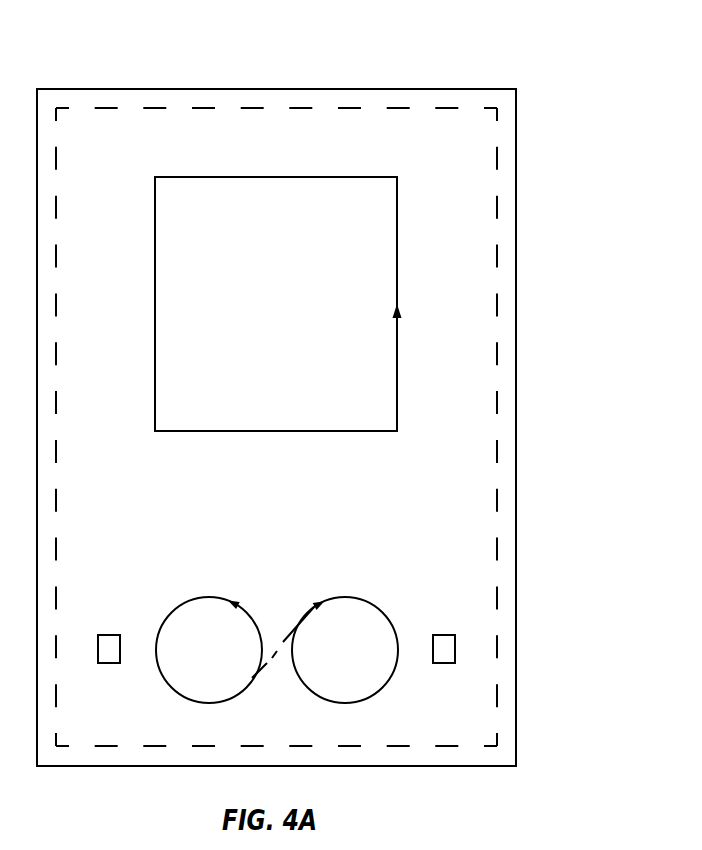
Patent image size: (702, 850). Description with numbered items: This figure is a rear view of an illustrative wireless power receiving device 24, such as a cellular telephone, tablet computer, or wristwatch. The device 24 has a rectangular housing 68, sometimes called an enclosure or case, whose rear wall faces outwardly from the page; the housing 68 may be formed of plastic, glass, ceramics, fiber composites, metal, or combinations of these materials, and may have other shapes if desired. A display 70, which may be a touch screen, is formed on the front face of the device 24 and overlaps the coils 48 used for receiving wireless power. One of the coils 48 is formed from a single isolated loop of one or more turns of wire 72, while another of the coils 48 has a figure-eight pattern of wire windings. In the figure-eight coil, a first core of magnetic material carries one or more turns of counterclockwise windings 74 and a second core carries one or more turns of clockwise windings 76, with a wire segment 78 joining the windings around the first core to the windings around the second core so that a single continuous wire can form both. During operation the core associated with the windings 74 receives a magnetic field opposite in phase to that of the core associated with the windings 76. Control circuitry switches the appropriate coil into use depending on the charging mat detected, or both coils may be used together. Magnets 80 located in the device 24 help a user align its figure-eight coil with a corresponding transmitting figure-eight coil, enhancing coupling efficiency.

The wireless power receiving device 24 is at (517, 64).
The coils 48 is at (292, 447).
The housing 68 is at (517, 267).
The display 70 is at (498, 308).
The wire 72 is at (226, 432).
The counterclockwise windings 74 is at (210, 597).
The clockwise windings 76 is at (349, 597).
The wire segment 78 is at (273, 660).
The magnets 80 is at (108, 664).